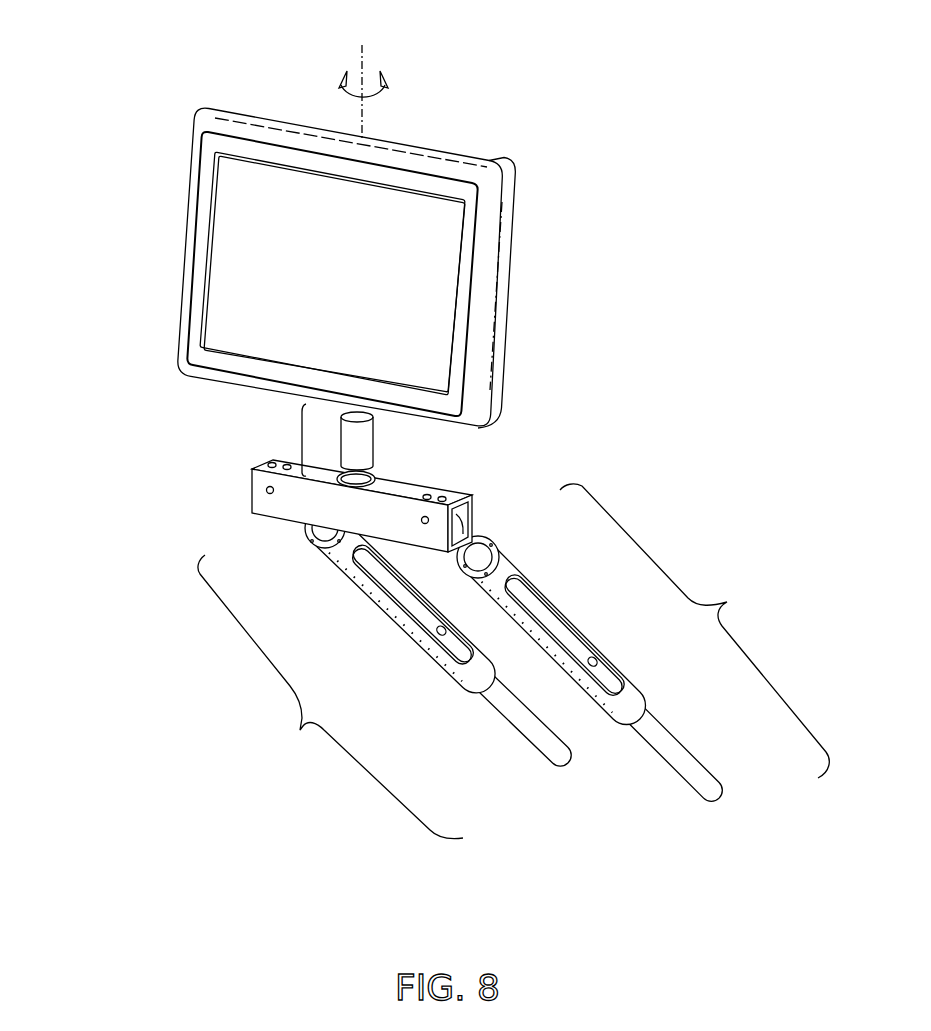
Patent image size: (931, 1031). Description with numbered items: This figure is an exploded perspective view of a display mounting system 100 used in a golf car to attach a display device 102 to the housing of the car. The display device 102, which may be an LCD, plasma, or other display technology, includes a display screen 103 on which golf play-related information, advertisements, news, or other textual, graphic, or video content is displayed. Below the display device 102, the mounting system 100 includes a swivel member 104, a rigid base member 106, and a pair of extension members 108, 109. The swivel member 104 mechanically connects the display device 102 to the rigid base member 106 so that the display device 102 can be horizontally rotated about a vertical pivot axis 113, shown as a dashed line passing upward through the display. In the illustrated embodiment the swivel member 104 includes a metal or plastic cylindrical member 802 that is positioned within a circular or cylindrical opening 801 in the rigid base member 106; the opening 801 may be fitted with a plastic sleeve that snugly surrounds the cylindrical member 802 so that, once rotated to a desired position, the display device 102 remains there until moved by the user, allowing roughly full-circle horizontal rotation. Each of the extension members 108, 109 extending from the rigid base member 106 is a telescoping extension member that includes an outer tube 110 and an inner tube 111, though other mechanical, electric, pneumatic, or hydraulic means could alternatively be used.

The display mounting system 100 is at (708, 185).
The display device 102 is at (497, 325).
The display screen 103 is at (232, 270).
The swivel member 104 is at (397, 451).
The rigid base member 106 is at (283, 510).
The extension member 108 is at (694, 631).
The extension member 109 is at (330, 697).
The outer tube 110 is at (355, 585).
The inner tube 111 is at (487, 542).
The vertical pivot axis 113 is at (363, 62).
The cylindrical opening 801 is at (375, 479).
The cylindrical member 802 is at (363, 443).